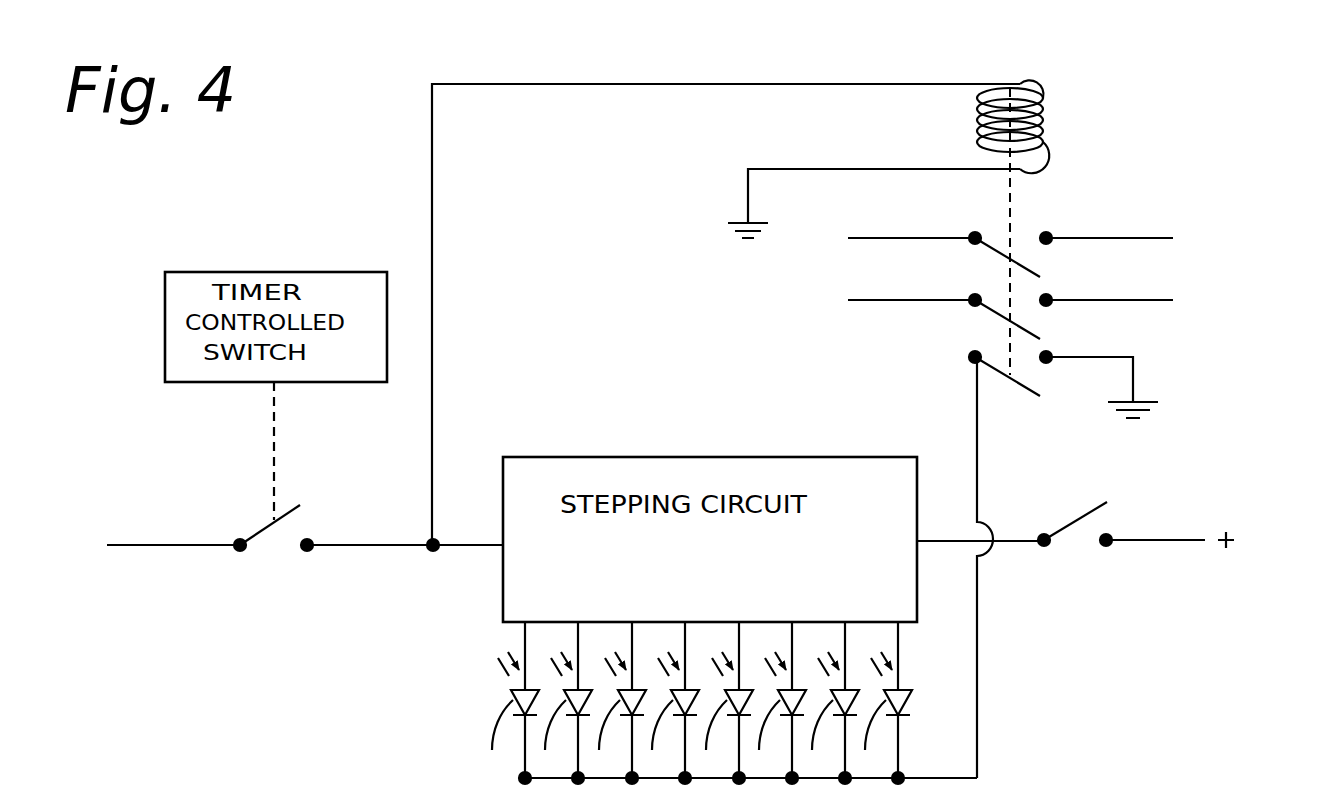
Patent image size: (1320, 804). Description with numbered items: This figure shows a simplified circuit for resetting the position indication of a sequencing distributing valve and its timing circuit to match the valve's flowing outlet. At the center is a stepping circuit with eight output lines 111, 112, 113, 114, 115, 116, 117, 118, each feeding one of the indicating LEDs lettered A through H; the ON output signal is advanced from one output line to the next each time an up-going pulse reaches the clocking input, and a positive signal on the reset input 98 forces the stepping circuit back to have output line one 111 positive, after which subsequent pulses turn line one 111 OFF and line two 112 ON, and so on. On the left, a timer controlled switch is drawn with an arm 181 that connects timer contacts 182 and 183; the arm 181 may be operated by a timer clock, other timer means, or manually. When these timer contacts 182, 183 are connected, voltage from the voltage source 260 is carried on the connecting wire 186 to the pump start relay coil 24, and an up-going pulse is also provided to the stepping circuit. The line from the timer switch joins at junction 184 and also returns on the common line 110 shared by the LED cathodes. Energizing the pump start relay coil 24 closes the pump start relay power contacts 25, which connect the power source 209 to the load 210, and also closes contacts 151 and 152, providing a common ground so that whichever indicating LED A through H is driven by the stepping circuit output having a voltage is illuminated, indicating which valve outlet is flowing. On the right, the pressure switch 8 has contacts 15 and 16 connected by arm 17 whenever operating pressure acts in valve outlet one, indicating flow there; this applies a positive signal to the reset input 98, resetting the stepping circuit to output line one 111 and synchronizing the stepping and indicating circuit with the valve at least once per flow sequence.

The connecting wire 186 is at (625, 86).
The pump start relay coil 24 is at (1043, 135).
The pump start relay power contacts 25 is at (1036, 216).
The power source 209 is at (796, 272).
The load 210 is at (1212, 270).
The contact 152 is at (1057, 350).
The contact 151 is at (970, 365).
The arm 181 is at (258, 517).
The timer contact 182 is at (240, 556).
The timer contact 183 is at (307, 556).
The junction 184 is at (340, 545).
The voltage source 260 is at (195, 548).
The reset input 98 is at (500, 543).
The arm 17 is at (1078, 512).
The pressure switch 8 is at (1110, 520).
The contact 16 is at (1044, 552).
The contact 15 is at (1106, 552).
The common return line 110 is at (980, 695).
The output line one 111 is at (525, 641).
The output line two 112 is at (578, 641).
The output line 113 is at (632, 641).
The output line four 114 is at (685, 641).
The output line 115 is at (739, 641).
The output line 116 is at (792, 641).
The output line 117 is at (845, 641).
The output line 118 is at (898, 641).